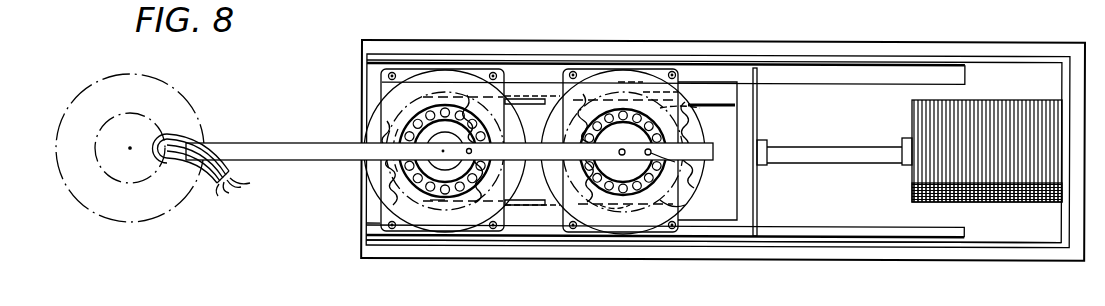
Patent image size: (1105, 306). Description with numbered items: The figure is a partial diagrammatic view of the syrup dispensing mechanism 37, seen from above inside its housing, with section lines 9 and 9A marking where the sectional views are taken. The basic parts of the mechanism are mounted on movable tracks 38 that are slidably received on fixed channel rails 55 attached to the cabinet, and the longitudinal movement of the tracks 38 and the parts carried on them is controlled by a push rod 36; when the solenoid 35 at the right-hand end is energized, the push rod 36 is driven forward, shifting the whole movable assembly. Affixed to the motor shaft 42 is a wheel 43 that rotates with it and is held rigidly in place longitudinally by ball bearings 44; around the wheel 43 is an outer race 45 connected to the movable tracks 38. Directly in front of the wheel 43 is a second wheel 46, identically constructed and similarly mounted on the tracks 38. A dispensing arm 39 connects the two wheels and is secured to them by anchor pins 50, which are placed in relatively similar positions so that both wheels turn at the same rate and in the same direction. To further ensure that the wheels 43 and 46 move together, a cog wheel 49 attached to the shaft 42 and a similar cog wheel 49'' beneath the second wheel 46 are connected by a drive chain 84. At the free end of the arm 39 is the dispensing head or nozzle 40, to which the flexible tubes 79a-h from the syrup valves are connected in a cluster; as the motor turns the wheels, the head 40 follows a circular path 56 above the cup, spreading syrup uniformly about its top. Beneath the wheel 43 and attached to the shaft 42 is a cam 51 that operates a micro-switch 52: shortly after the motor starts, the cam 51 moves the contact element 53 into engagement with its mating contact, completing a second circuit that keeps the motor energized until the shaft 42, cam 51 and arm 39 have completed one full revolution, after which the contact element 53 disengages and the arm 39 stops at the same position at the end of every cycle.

The section line 9- 9 is at (350, 220).
The section line 9A- 9A is at (383, 19).
The solenoid 35 is at (1023, 94).
The push rod 36 is at (843, 150).
The mechanism 37 is at (773, 36).
The movable tracks 38 is at (728, 232).
The arm 39 is at (333, 133).
The dispensing head or nozzle 40 is at (172, 136).
The shaft 42 is at (623, 137).
The wheel 43 is at (624, 170).
The ball bearings 44 is at (637, 113).
The outer race 45 is at (610, 78).
The second wheel 46 is at (431, 125).
The cog wheel 49 is at (687, 211).
The bearing retainer 49'' is at (446, 216).
The anchor pin 50 is at (486, 117).
The cam 51 is at (615, 214).
The micro-switch 52 is at (727, 95).
The contact element 53 is at (672, 106).
The fixed channel rails 55 is at (862, 70).
The circular path 56 is at (82, 97).
The flexible tubes 79a-h is at (218, 175).
The drive chain 84 is at (480, 166).